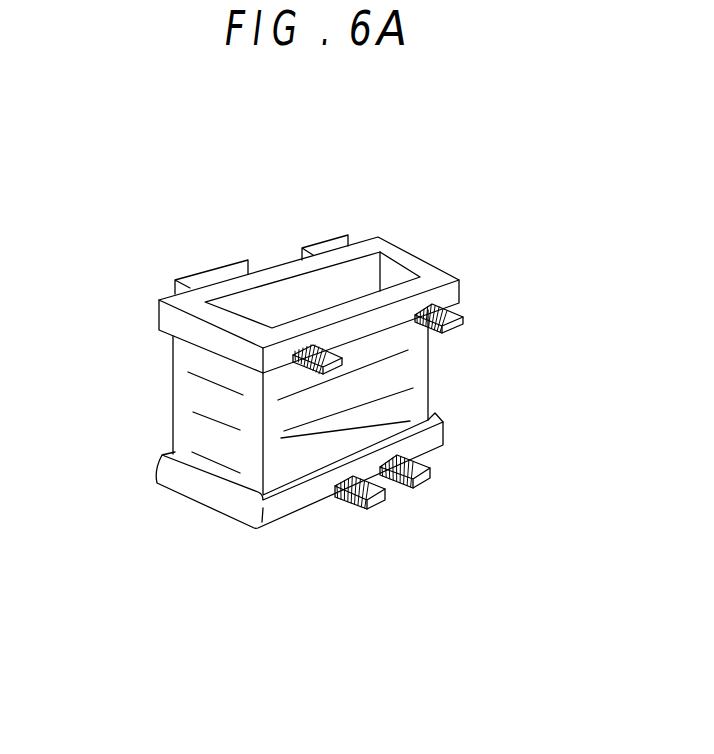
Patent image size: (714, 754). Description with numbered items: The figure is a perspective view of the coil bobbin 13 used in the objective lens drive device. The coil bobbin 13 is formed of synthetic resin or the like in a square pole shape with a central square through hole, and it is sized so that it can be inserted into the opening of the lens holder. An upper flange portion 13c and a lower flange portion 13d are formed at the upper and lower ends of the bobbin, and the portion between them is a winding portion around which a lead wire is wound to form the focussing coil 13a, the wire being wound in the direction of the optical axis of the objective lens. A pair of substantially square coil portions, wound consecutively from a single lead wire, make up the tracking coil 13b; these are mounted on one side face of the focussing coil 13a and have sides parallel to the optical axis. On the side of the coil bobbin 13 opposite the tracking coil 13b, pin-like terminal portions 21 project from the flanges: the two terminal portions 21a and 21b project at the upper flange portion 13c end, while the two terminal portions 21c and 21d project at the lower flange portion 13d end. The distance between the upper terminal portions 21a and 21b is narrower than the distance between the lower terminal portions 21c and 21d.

The coil bobbin 13 is at (373, 225).
The focussing coil 13a is at (238, 422).
The tracking coil 13b is at (310, 242).
The upper flange portion 13c is at (163, 315).
The lower flange portion 13d is at (167, 482).
The terminal portions 21 is at (487, 302).
The terminal portion 21a is at (300, 363).
The terminal portion 21b is at (462, 312).
The terminal portion 21c is at (362, 511).
The terminal portion 21d is at (423, 500).